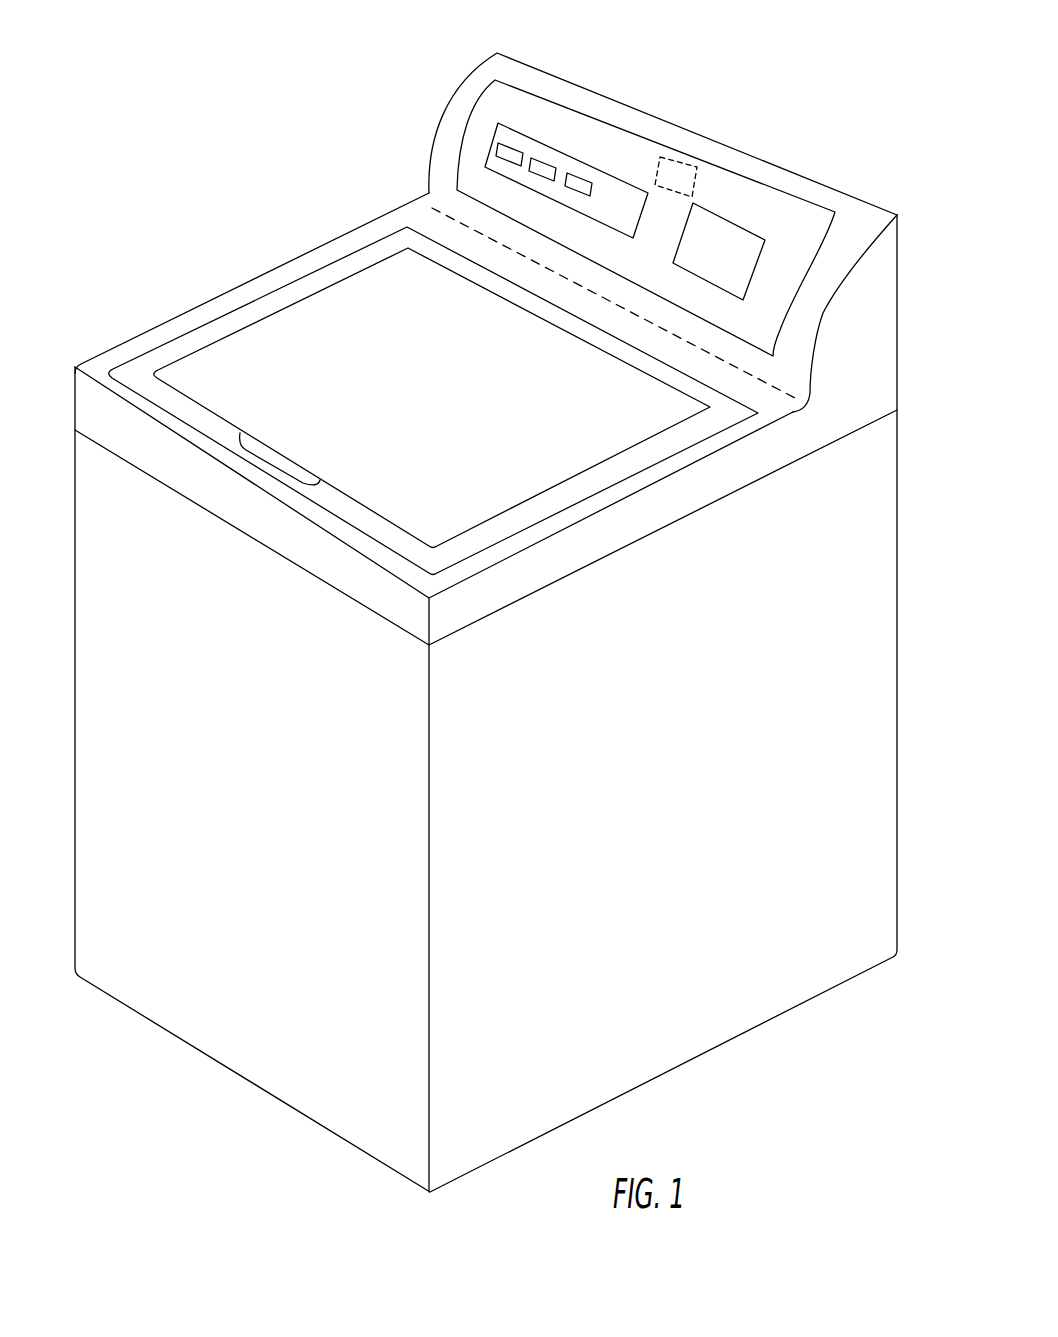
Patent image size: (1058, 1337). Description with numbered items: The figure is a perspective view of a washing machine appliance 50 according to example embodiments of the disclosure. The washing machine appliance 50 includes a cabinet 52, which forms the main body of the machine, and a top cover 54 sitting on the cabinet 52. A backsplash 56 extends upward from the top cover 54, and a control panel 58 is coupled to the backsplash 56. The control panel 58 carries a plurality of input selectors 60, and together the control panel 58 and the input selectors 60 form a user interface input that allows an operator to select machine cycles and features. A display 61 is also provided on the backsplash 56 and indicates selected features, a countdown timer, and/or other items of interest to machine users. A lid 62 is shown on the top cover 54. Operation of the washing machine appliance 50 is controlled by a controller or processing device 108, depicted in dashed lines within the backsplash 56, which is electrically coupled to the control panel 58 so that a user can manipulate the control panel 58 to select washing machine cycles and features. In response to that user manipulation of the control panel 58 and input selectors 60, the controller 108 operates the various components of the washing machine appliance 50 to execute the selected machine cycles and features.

The washing machine appliance 50 is at (750, 112).
The cabinet 52 is at (865, 635).
The top cover 54 is at (82, 405).
The backsplash 56 is at (848, 317).
The control panel 58 is at (622, 190).
The input selectors 60 is at (513, 153).
The display 61 is at (747, 233).
The lid 62 is at (333, 310).
The controller 108 is at (697, 178).